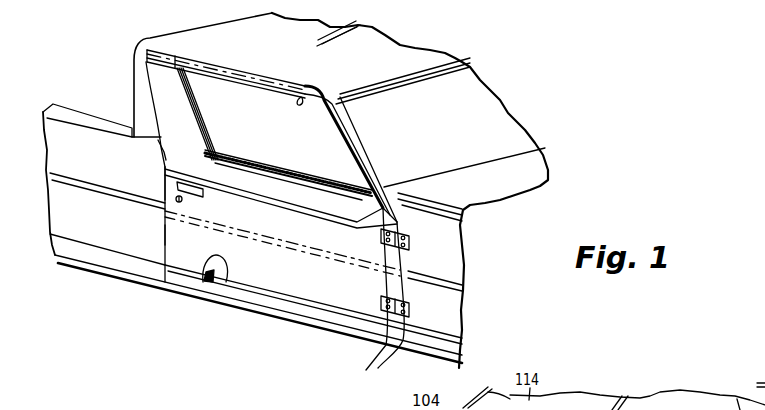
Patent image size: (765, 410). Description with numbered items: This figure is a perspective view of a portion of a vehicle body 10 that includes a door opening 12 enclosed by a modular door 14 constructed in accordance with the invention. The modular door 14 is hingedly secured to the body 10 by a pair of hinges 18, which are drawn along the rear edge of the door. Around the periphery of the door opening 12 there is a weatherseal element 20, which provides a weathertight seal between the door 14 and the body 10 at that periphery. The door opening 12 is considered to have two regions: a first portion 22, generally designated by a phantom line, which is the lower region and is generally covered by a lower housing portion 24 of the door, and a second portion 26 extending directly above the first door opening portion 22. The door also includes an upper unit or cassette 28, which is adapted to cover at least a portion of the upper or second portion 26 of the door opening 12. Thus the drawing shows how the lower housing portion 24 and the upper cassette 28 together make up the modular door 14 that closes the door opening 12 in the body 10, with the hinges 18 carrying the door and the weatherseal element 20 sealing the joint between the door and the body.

The vehicle body 10 is at (75, 102).
The door opening 12 is at (226, 282).
The modular door 14 is at (190, 222).
The hinges 18 is at (374, 299).
The weatherseal element 20 is at (302, 100).
The first portion of the door opening 22 is at (165, 167).
The lower housing portion 24 is at (160, 233).
The second portion of the door opening 26 is at (173, 170).
The upper unit or cassette 28 is at (156, 152).